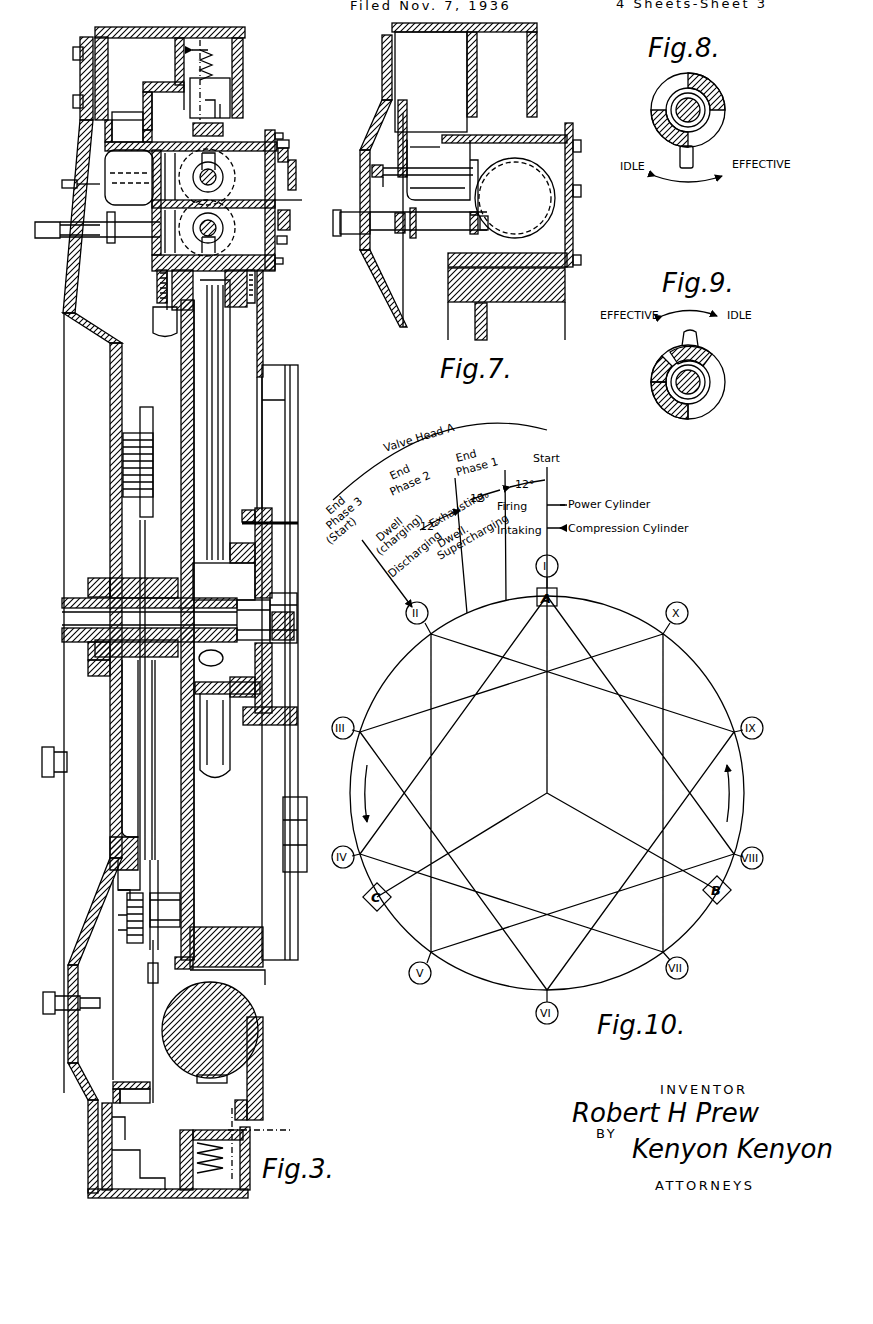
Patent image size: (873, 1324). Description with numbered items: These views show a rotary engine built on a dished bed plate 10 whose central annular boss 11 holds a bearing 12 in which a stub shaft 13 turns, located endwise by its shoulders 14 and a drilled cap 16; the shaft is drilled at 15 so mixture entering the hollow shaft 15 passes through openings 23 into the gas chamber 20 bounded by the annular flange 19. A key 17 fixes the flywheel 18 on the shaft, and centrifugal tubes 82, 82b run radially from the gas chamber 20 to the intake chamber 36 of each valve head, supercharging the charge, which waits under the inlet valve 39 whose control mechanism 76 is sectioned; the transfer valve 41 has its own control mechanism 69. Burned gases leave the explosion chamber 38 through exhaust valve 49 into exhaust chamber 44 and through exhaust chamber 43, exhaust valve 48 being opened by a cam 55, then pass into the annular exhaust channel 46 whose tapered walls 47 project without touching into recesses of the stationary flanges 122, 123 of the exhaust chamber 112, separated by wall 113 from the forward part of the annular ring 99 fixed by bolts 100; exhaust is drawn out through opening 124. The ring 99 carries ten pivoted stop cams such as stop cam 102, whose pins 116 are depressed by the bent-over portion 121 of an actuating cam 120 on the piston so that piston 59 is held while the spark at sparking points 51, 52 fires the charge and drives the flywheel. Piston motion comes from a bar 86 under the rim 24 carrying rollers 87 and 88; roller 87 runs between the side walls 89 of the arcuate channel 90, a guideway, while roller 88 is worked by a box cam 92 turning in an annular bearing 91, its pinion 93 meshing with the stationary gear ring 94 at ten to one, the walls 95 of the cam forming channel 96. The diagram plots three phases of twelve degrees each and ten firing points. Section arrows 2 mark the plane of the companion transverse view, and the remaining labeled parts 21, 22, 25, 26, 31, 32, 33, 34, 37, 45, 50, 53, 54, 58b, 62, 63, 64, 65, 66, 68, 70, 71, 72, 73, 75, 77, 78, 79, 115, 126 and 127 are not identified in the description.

In FIG. 3, the section line 2 is at (241, 611).
In FIG. 3, the bed plate 10 is at (112, 462).
In FIG. 7, the bed plate 10 is at (395, 300).
In FIG. 3, the annular boss 11 is at (112, 575).
In FIG. 3, the bearing 12 is at (90, 585).
In FIG. 3, the stub shaft 13 is at (90, 650).
In FIG. 3, the shoulders 14 is at (90, 668).
In FIG. 3, the drilled opening 15 is at (66, 612).
In FIG. 3, the drilled cap 16 is at (66, 635).
In FIG. 3, the key 17 is at (225, 655).
In FIG. 3, the flywheel 18 is at (190, 462).
In FIG. 7, the flywheel 18 is at (488, 337).
In FIG. 3, the annular flange 19 is at (230, 690).
In FIG. 3, the gas chamber 20 is at (235, 582).
In FIG. 3, the plate 21 is at (272, 557).
In FIG. 3, the coupling 22 is at (297, 600).
In FIG. 3, the opening 23 is at (272, 637).
In FIG. 3, the rim 24 is at (258, 300).
In FIG. 7, the rim 24 is at (560, 285).
In FIG. 3, the piston 25 is at (155, 318).
In FIG. 3, the valve housing 26 is at (255, 315).
In FIG. 7, the valve housing 26 is at (580, 258).
In FIG. 3, the bottom plate 31 is at (277, 272).
In FIG. 3, the screw 32 is at (283, 136).
In FIG. 3, the rod 33 is at (152, 238).
In FIG. 3, the valve bore 34 is at (230, 165).
In FIG. 3, the intake chamber 36 is at (165, 248).
In FIG. 3, the chamber 37 is at (131, 189).
In FIG. 7, the explosion chamber 38 is at (540, 198).
In FIG. 3, the inlet valve 39 is at (158, 280).
In FIG. 3, the transfer valve 41 is at (260, 142).
In FIG. 3, the exhaust chamber 43 is at (122, 160).
In FIG. 7, the exhaust chamber 43 is at (452, 150).
In FIG. 7, the exhaust chamber 44 is at (437, 185).
In FIG. 7, the port 45 is at (408, 142).
In FIG. 3, the annular exhaust channel 46 is at (122, 132).
In FIG. 7, the annular exhaust channel 46 is at (418, 130).
In FIG. 3, the walls 47 is at (140, 125).
In FIG. 7, the exhaust valve 48 is at (428, 163).
In FIG. 7, the exhaust valve 49 is at (480, 170).
In FIG. 7, the shaft 50 is at (445, 235).
In FIG. 7, the sparking point 51 is at (490, 218).
In FIG. 7, the sparking point 52 is at (416, 236).
In FIG. 7, the nut 53 is at (398, 234).
In FIG. 7, the knob 54 is at (342, 213).
In FIG. 3, the cam 55 is at (75, 186).
In FIG. 7, the cam 55 is at (387, 184).
In FIG. 3, the rack bar 58b is at (298, 437).
In FIG. 3, the piston 59 is at (263, 356).
In FIG. 3, the nut 62 is at (288, 158).
In FIG. 3, the nut 63 is at (290, 220).
In FIG. 3, the stud 64 is at (296, 178).
In FIG. 3, the valve stem 65 is at (225, 160).
In FIG. 8, the valve stem 65 is at (678, 118).
In FIG. 3, the valve head 66 is at (196, 160).
In FIG. 8, the sector 68 is at (705, 80).
In FIG. 3, the control mechanism 69 is at (289, 145).
In FIG. 8, the control mechanism 69 is at (665, 84).
In FIG. 8, the sector 70 is at (708, 128).
In FIG. 8, the stem 71 is at (694, 158).
In FIG. 8, the shaft 72 is at (700, 104).
In FIG. 3, the shaft 73 is at (166, 295).
In FIG. 9, the shaft 73 is at (700, 388).
In FIG. 9, the sector 75 is at (660, 382).
In FIG. 3, the control mechanism 76 is at (287, 242).
In FIG. 9, the control mechanism 76 is at (690, 420).
In FIG. 9, the sector 77 is at (710, 358).
In FIG. 9, the lug 78 is at (682, 337).
In FIG. 9, the sector 79 is at (668, 404).
In FIG. 3, the centrifugal tube 82 is at (215, 393).
In FIG. 3, the centrifugal tube 82b is at (229, 735).
In FIG. 3, the bar 86 is at (152, 995).
In FIG. 3, the roller 87 is at (240, 975).
In FIG. 3, the roller 88 is at (148, 968).
In FIG. 3, the side walls 89 is at (190, 960).
In FIG. 3, the arcuate channel 90 is at (228, 1030).
In FIG. 3, the annular bearing 91 is at (163, 895).
In FIG. 3, the box cam 92 is at (128, 892).
In FIG. 3, the pinion 93 is at (127, 910).
In FIG. 3, the gear ring 94 is at (118, 870).
In FIG. 3, the walls 95 is at (178, 900).
In FIG. 3, the channel 96 is at (122, 945).
In FIG. 3, the annular ring 99 is at (230, 50).
In FIG. 3, the bolts 100 is at (75, 48).
In FIG. 3, the stop cam 102 is at (208, 121).
In FIG. 3, the exhaust chamber 112 is at (118, 66).
In FIG. 7, the exhaust chamber 112 is at (464, 77).
In FIG. 3, the wall 113 is at (176, 48).
In FIG. 3, the port 115 is at (180, 84).
In FIG. 3, the pin 116 is at (236, 100).
In FIG. 3, the actuating cam 120 is at (262, 1062).
In FIG. 3, the bent-over portion 121 is at (262, 1125).
In FIG. 3, the stationary flange 122 is at (118, 1100).
In FIG. 3, the stationary flange 123 is at (112, 1125).
In FIG. 3, the opening 124 is at (130, 1172).
In FIG. 7, the bore 126 is at (485, 180).
In FIG. 7, the screw 127 is at (386, 163).